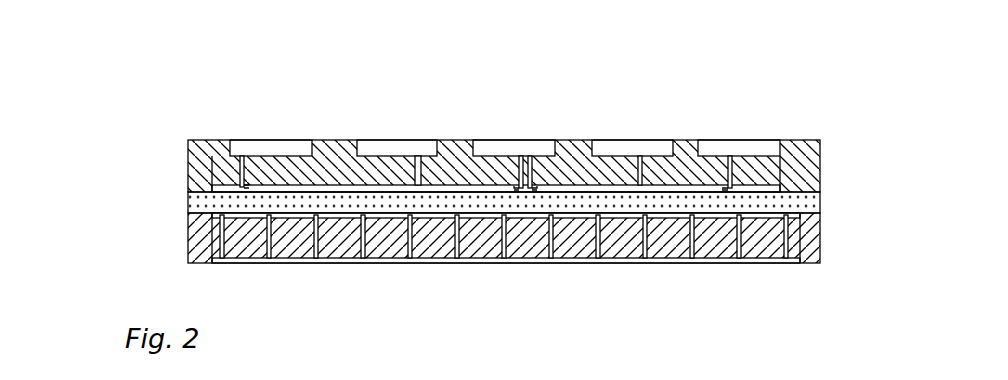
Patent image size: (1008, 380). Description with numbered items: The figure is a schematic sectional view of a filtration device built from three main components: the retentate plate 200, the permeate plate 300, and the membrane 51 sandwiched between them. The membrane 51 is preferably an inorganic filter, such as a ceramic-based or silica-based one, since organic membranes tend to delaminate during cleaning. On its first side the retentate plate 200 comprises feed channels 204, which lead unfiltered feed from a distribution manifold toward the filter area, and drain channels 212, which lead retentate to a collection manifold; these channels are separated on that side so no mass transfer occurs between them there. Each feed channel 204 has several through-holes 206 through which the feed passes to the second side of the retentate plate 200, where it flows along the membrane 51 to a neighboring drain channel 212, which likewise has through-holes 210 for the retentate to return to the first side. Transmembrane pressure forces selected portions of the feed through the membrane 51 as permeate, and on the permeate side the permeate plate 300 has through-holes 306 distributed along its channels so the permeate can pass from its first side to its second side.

The retentate plate 200 is at (504, 117).
The feed channels 204 is at (300, 152).
The through-holes 206 is at (233, 156).
The through-holes 210 is at (418, 156).
The drain channels 212 is at (373, 149).
The membrane 51 is at (190, 203).
The permeate plate 300 is at (466, 270).
The through-holes 306 is at (319, 257).